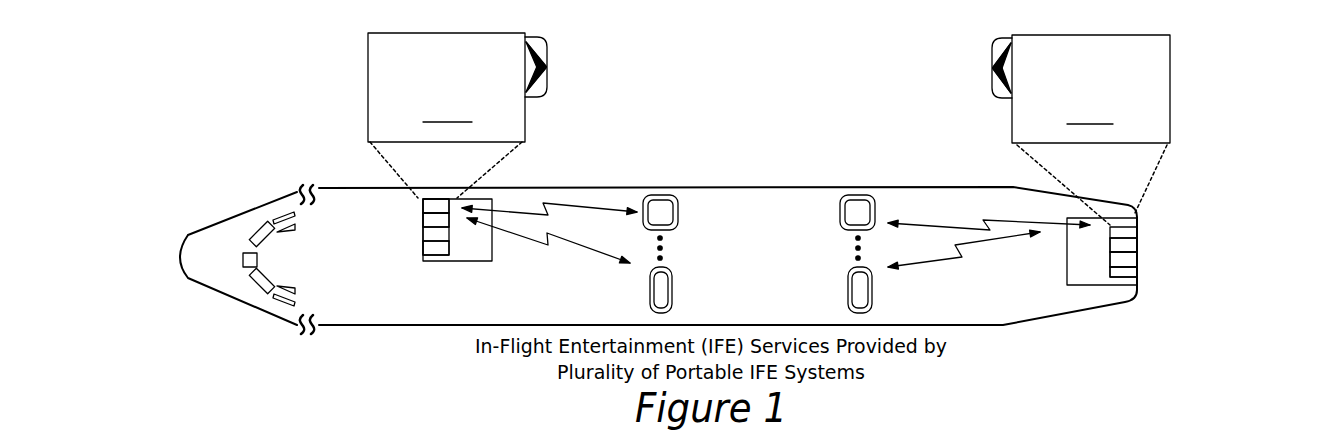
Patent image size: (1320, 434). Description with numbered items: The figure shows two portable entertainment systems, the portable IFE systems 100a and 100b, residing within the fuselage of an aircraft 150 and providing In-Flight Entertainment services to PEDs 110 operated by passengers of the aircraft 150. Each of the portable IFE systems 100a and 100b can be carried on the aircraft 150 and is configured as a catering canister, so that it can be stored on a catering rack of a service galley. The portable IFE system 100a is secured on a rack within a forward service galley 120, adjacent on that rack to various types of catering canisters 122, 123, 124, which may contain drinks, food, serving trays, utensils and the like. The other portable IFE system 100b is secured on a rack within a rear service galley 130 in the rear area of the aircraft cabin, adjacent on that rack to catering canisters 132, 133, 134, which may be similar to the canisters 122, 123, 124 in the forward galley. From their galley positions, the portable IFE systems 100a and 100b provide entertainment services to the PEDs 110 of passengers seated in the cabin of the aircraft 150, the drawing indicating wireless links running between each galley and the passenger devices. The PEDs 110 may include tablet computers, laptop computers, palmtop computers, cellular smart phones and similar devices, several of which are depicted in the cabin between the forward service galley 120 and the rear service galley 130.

The portable IFE system 100a is at (437, 208).
The portable IFE system 100b is at (1123, 233).
The PED 110 is at (848, 288).
The forward service galley 120 is at (462, 261).
The catering canister 122 is at (437, 221).
The catering canister 123 is at (437, 235).
The catering canister 124 is at (437, 248).
The rear service galley 130 is at (1102, 285).
The catering canister 132 is at (1123, 243).
The catering canister 133 is at (1123, 258).
The catering canister 134 is at (1123, 273).
The aircraft 150 is at (697, 187).